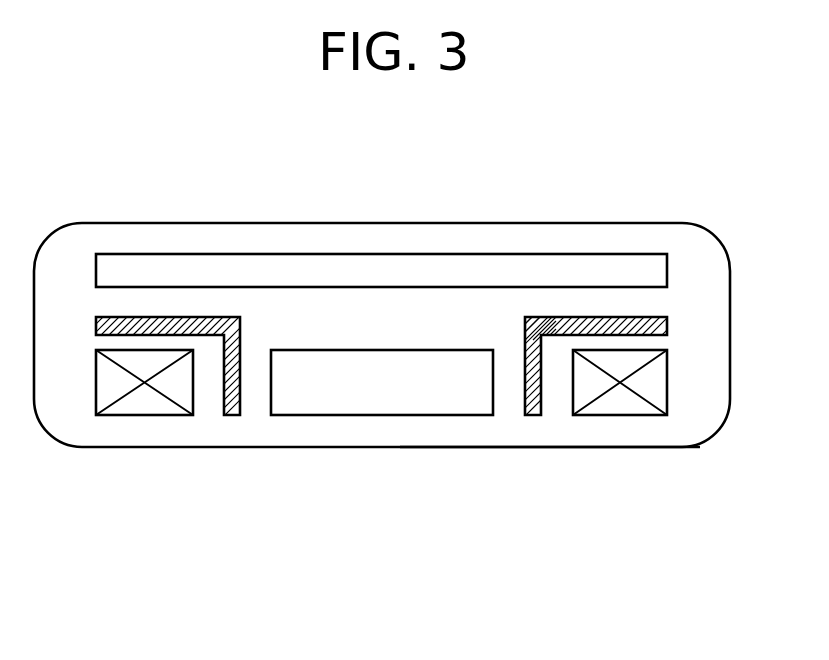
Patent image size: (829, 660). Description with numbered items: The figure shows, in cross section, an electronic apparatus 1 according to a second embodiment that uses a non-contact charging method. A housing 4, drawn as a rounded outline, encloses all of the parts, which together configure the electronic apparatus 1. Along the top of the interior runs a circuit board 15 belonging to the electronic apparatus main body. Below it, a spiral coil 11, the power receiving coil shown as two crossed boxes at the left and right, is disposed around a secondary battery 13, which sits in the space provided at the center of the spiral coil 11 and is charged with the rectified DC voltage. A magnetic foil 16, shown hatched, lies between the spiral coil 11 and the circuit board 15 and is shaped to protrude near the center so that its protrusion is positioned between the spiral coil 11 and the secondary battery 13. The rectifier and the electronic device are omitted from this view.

The electronic apparatus 1 is at (699, 192).
The housing 4 is at (602, 447).
The spiral coil 11 is at (668, 382).
The secondary battery 13 is at (445, 414).
The circuit board 15 is at (577, 254).
The magnetic foil 16 is at (668, 325).